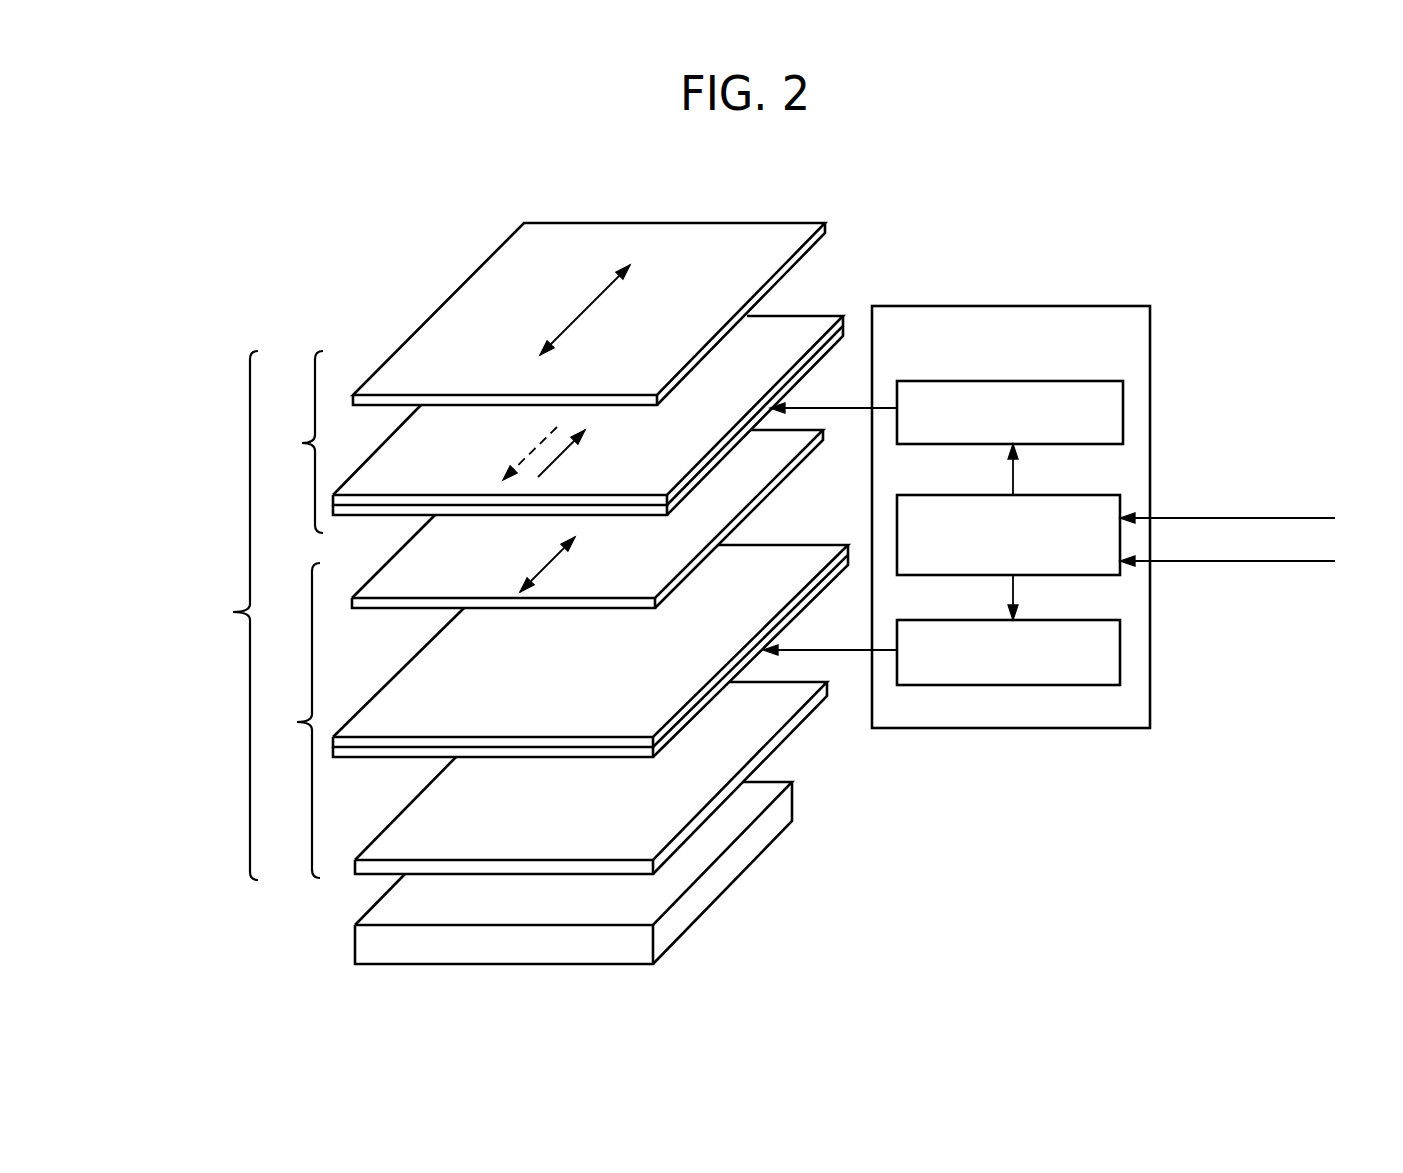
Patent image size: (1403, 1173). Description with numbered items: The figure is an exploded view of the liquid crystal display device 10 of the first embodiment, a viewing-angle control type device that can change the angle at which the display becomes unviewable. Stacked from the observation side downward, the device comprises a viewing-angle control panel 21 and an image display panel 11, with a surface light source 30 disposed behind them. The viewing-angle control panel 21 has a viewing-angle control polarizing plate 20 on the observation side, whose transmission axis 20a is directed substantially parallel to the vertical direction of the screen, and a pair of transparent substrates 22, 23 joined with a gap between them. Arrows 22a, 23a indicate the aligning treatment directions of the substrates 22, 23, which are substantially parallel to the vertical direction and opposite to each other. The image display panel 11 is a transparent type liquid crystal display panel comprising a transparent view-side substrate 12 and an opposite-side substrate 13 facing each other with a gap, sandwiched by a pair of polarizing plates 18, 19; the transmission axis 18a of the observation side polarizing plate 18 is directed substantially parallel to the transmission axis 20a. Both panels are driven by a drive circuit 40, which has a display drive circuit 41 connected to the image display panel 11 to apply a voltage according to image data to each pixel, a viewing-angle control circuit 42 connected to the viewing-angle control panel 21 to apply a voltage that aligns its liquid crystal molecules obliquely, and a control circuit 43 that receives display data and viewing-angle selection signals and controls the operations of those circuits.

The liquid crystal display device 10 is at (227, 615).
The image display panel 11 is at (291, 720).
The view-side substrate 12 is at (668, 668).
The opposite-side substrate 13 is at (743, 670).
The observation side polarizing plate 18 is at (730, 497).
The transmission axis 18a is at (543, 567).
The polarizing plate 19 is at (682, 785).
The viewing-angle control polarizing plate 20 is at (725, 245).
The transmission axis 20a is at (600, 297).
The viewing-angle control panel 21 is at (293, 442).
The transparent substrate 22 is at (778, 328).
The aligning treatment direction 22a is at (558, 457).
The transparent substrate 23 is at (830, 348).
The aligning treatment direction 23a is at (523, 459).
The surface light source 30 is at (340, 942).
The drive circuit 40 is at (1110, 307).
The display drive circuit 41 is at (907, 620).
The viewing-angle control circuit 42 is at (907, 381).
The control circuit 43 is at (907, 495).